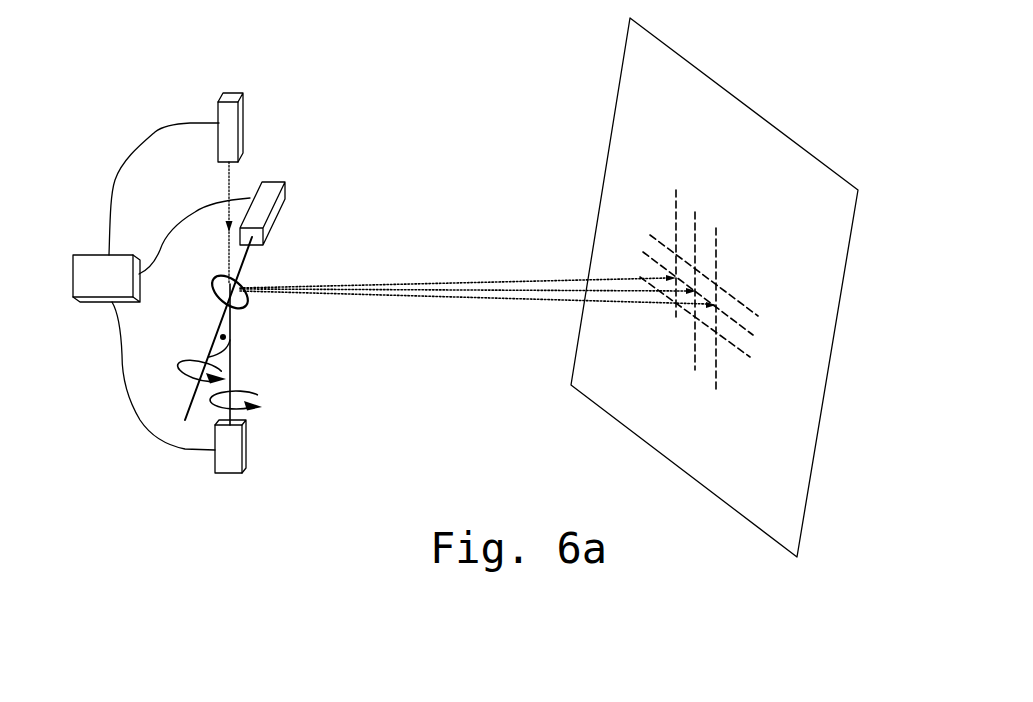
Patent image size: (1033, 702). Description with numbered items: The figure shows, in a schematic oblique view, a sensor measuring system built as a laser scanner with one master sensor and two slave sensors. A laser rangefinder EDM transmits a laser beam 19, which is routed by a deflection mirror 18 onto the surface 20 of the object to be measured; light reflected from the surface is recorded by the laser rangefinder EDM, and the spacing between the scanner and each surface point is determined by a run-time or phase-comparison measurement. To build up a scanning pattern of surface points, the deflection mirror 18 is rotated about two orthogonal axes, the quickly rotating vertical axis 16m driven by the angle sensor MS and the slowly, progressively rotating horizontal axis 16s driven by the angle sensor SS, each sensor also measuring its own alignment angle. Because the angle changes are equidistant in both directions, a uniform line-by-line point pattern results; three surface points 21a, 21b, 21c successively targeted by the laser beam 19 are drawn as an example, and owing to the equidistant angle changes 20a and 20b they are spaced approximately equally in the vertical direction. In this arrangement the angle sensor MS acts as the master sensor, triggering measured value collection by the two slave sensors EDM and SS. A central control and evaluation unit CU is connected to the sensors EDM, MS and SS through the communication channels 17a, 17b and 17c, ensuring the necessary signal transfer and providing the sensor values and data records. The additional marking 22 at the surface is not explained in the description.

The horizontal axis 16s is at (210, 348).
The vertical axis 16m is at (248, 362).
The communication channel 17a is at (155, 140).
The communication channel 17b is at (175, 240).
The communication channel 17c is at (145, 383).
The deflection mirror 18 is at (262, 297).
The laser beam 19 is at (252, 180).
The surface 20 is at (714, 287).
The equidistant angle change 20a is at (577, 277).
The equidistant angle change 20b is at (556, 281).
The surface point 21a is at (733, 297).
The surface point 21b is at (715, 280).
The surface point 21c is at (695, 268).
The scan grid lines 22 is at (722, 230).
The laser rangefinder EDM is at (260, 100).
The angle sensor SS is at (290, 197).
The central control and evaluation unit CU is at (122, 268).
The angle sensor MS is at (255, 450).